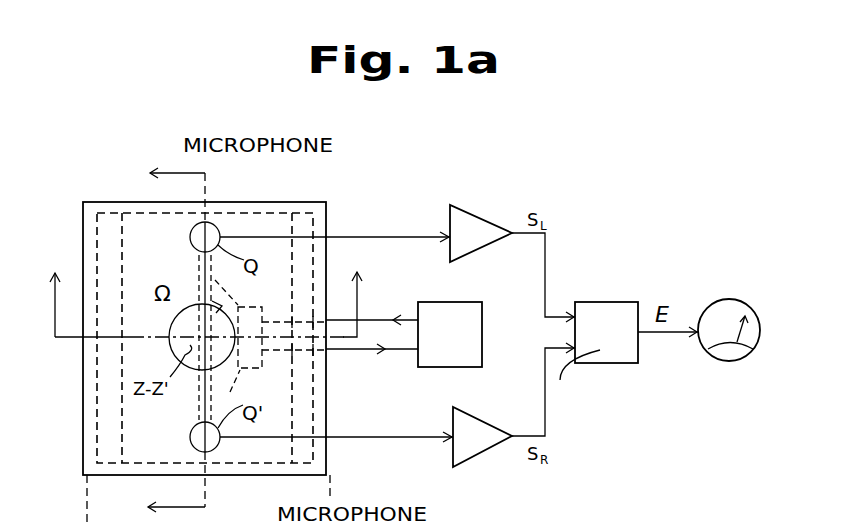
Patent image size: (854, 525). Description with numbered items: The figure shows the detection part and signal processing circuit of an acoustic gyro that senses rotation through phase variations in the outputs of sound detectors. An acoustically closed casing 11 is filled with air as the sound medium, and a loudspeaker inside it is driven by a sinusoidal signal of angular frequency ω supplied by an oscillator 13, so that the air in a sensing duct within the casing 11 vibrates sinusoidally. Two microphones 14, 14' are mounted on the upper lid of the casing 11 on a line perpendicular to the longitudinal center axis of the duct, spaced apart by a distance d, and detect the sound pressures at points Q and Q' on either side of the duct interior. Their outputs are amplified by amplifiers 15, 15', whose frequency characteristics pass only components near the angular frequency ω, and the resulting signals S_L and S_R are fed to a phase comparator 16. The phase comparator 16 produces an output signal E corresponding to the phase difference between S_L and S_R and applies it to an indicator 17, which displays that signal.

The casing 11 is at (317, 202).
The oscillator 13 is at (455, 302).
The microphone 14 is at (225, 203).
The microphone 14' is at (231, 473).
The amplifier 15 is at (481, 217).
The amplifier 15' is at (484, 423).
The phase comparator 16 is at (600, 302).
The indicator 17 is at (728, 299).